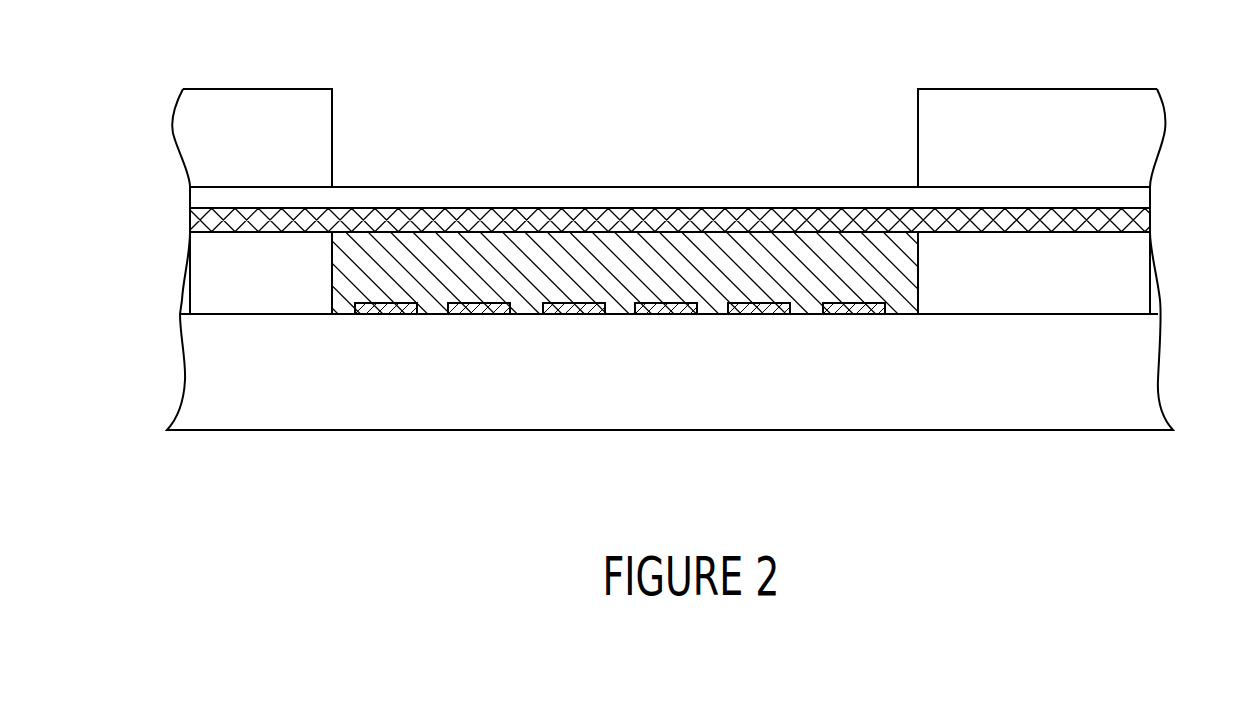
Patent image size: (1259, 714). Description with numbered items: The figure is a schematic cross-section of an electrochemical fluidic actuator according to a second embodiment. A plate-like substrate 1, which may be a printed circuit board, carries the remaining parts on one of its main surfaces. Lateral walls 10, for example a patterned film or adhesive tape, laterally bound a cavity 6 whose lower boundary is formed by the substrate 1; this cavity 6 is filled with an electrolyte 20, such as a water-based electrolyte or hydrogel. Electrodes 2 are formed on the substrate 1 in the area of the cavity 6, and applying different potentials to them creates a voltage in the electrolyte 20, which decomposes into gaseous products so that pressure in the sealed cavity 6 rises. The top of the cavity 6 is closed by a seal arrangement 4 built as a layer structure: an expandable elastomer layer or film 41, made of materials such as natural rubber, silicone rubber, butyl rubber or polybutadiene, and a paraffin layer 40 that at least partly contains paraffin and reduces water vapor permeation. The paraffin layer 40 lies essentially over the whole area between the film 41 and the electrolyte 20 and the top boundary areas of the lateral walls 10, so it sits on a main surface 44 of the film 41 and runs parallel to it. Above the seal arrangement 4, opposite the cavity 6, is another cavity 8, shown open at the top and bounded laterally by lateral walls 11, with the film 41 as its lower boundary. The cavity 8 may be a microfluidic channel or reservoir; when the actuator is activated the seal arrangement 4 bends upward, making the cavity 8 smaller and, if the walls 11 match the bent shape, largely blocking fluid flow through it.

The substrate 1 is at (277, 380).
The electrodes 2 is at (557, 314).
The seal arrangement 4 is at (878, 73).
The cavity 6 is at (914, 268).
The cavity 8 is at (337, 122).
The lateral walls 10 is at (232, 270).
The lateral walls 11 is at (233, 142).
The electrolyte 20 is at (528, 268).
The paraffin layer 40 is at (860, 217).
The elastomer layer or film 41 is at (793, 193).
The main surface 44 is at (590, 215).